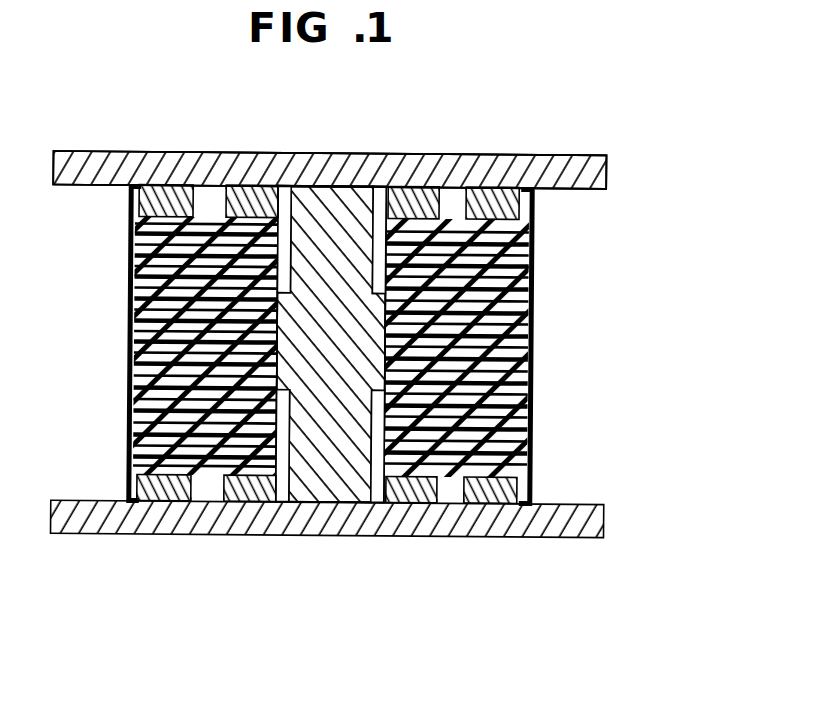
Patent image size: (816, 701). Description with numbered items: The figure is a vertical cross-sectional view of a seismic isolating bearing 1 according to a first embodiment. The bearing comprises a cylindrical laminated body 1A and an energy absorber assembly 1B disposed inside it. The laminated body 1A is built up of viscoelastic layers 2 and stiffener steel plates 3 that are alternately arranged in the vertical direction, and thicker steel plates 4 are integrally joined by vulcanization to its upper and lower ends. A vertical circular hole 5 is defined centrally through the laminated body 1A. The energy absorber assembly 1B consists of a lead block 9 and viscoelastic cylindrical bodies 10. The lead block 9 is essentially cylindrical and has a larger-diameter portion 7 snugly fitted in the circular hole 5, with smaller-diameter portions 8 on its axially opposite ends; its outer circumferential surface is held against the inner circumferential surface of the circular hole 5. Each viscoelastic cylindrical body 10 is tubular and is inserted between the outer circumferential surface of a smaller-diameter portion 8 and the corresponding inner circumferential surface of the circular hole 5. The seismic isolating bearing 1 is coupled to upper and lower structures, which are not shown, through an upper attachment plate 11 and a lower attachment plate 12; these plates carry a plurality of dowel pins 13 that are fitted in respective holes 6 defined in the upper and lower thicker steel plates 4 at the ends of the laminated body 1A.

The seismic isolating bearing 1 is at (520, 150).
The cylindrical laminated body 1A is at (548, 373).
The energy absorber assembly 1B is at (344, 178).
The viscoelastic layers 2 is at (515, 302).
The stiffener steel plates 3 is at (533, 288).
The thicker steel plates 4 is at (169, 188).
The vertical circular hole 5 is at (287, 397).
The holes 6 is at (231, 188).
The larger-diameter portion 7 is at (130, 338).
The smaller-diameter portions 8 is at (320, 200).
The lead block 9 is at (399, 155).
The viscoelastic cylindrical bodies 10 is at (285, 192).
The upper attachment plate 11 is at (605, 170).
The lower attachment plate 12 is at (605, 518).
The dowel pins 13 is at (452, 203).